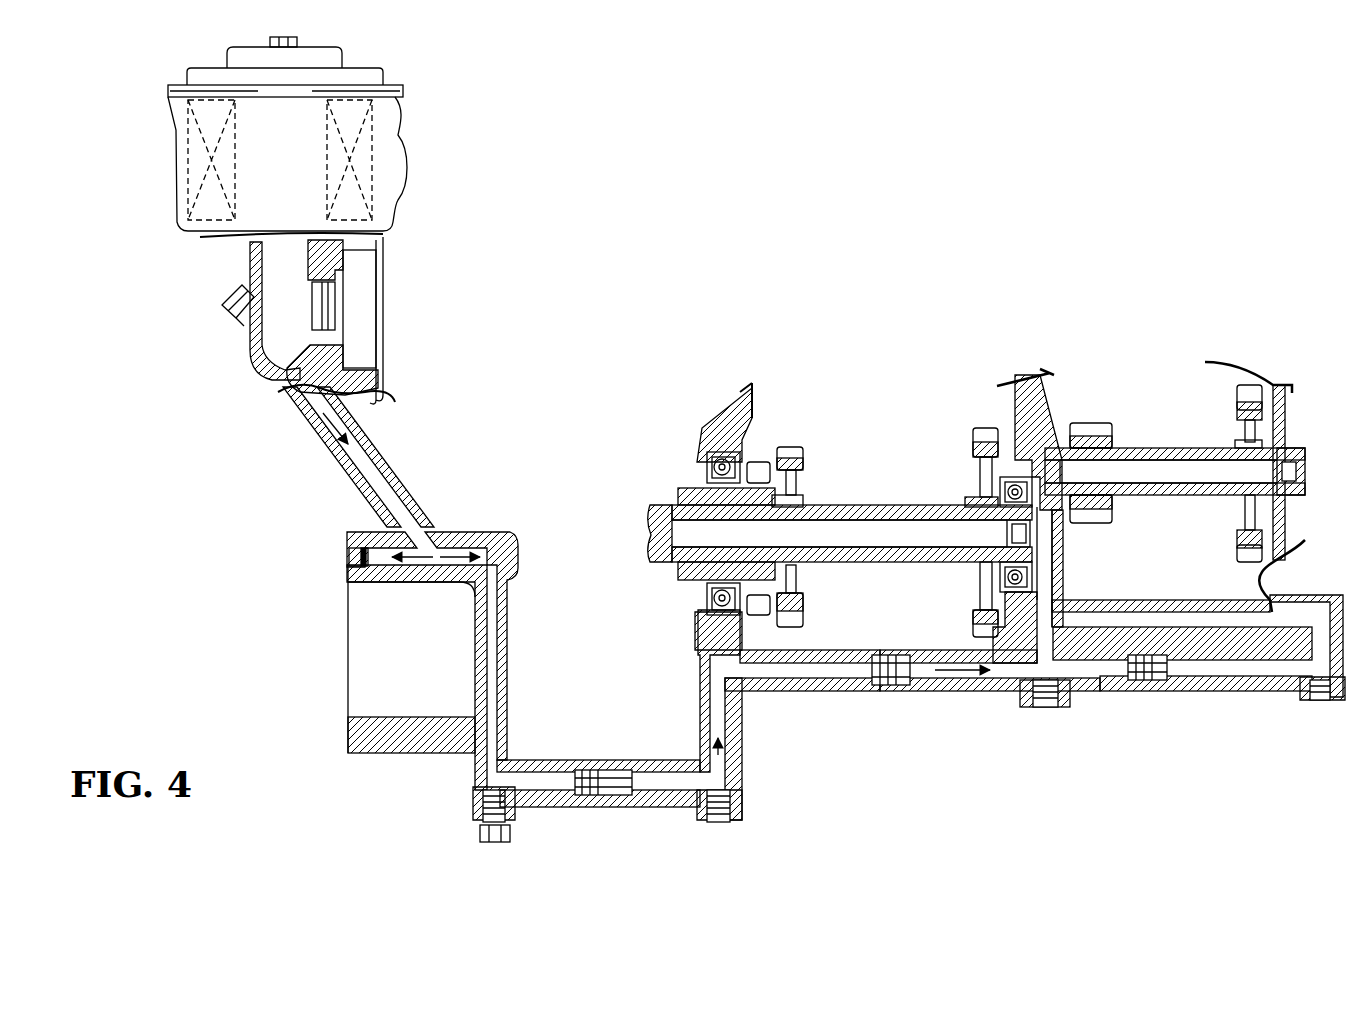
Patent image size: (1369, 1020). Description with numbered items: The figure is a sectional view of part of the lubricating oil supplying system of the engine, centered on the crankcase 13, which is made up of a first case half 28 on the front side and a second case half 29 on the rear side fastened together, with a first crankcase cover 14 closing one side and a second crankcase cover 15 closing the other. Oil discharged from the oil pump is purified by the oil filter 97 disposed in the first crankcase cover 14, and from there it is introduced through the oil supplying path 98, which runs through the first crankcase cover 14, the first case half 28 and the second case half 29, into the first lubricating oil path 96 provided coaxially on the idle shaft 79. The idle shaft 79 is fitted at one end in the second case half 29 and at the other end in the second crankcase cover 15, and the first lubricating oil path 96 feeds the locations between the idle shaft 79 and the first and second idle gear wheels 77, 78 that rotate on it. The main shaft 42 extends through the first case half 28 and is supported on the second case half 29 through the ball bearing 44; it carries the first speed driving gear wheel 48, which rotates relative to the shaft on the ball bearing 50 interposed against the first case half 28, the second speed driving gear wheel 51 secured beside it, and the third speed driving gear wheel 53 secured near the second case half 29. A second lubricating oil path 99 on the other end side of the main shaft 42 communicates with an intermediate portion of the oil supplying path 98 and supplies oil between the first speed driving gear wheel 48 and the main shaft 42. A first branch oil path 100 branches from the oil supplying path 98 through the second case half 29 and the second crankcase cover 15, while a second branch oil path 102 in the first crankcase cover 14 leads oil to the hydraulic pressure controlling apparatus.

The oil filter 97 is at (414, 131).
The second branch oil path 102 is at (375, 556).
The first crankcase cover 14 is at (405, 757).
The oil supplying path 98 is at (718, 684).
The ball bearing 50 is at (707, 468).
The first speed driving gear wheel 48 is at (754, 462).
The second speed driving gear wheel 51 is at (795, 450).
The main shaft 42 is at (840, 523).
The second lubricating oil path 99 is at (874, 537).
The third speed driving gear wheel 53 is at (978, 435).
The ball bearing 44 is at (1003, 578).
The second idle gear wheel 78 is at (1088, 430).
The idle shaft 79 is at (1175, 468).
The first idle gear wheel 77 is at (1250, 385).
The first lubricating oil path 96 is at (1186, 475).
The first branch oil path 100 is at (1197, 668).
The second crankcase cover 15 is at (1243, 692).
The first case half 28 is at (815, 693).
The second case half 29 is at (986, 710).
The crankcase 13 is at (912, 725).